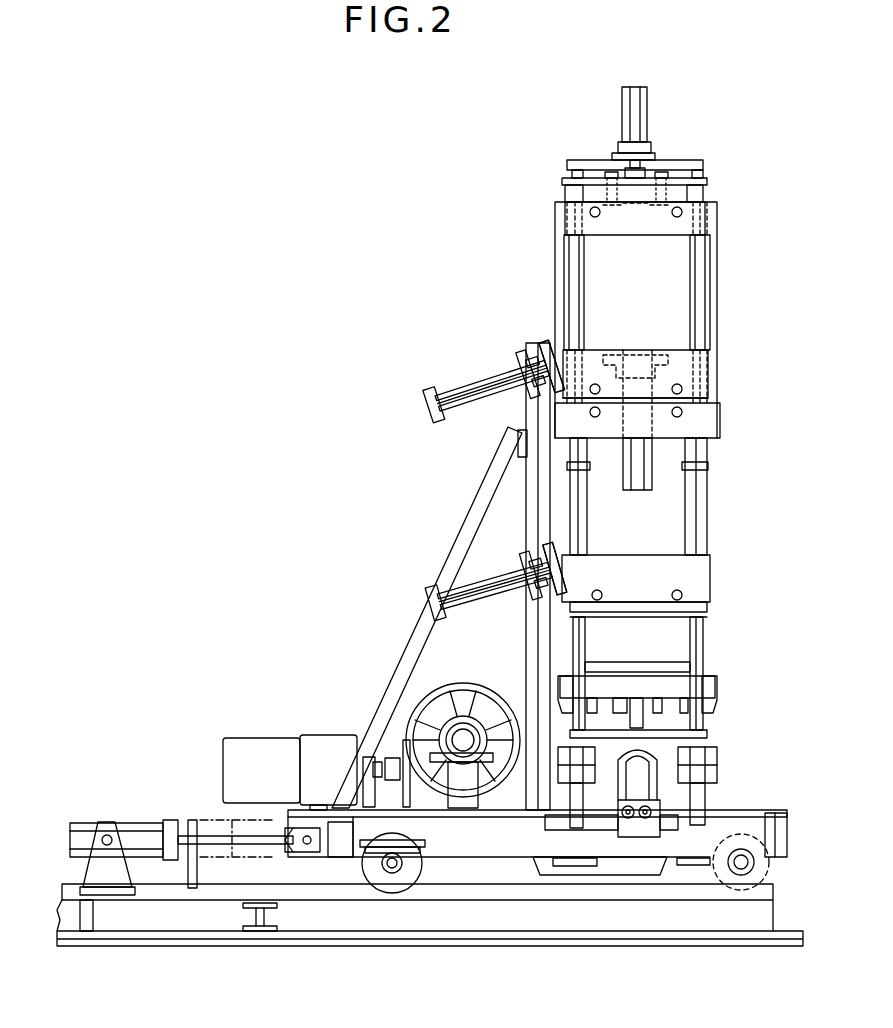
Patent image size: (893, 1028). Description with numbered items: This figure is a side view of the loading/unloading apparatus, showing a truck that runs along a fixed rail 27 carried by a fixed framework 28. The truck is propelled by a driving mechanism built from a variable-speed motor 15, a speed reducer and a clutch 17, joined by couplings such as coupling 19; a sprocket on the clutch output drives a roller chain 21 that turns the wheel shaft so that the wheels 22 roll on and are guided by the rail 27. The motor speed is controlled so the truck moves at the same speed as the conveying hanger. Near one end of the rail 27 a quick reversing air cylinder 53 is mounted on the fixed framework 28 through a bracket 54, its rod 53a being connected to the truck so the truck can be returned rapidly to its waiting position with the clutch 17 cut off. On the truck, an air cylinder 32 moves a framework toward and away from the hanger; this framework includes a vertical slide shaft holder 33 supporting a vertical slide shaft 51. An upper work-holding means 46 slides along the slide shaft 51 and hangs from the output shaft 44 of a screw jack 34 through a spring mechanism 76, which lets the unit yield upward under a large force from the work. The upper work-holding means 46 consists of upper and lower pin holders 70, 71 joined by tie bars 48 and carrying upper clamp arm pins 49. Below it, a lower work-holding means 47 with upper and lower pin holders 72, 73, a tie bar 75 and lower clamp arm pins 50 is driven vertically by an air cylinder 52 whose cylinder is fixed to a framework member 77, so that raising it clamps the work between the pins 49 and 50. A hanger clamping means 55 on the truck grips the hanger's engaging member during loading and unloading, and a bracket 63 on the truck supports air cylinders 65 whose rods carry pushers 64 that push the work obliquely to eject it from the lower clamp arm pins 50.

The variable-speed motor 15 is at (258, 738).
The clutch 17 is at (485, 702).
The coupling 19 is at (387, 760).
The roller chain 21 is at (460, 755).
The wheels 22 is at (412, 884).
The rail 27 is at (518, 886).
The fixed framework 28 is at (333, 934).
The air cylinder 32 is at (660, 752).
The slide shaft holder 33 is at (566, 166).
The screw jack 34 is at (648, 108).
The output shaft 44 is at (646, 171).
The upper work-holding means 46 is at (716, 424).
The lower work-holding means 47 is at (712, 586).
The tie bar 48 is at (560, 242).
The upper clamp arm pins 49 is at (590, 213).
The lower clamp arm pins 50 is at (598, 385).
The slide shaft 51 is at (576, 172).
The air cylinder 52 is at (640, 491).
The air cylinder 53 is at (152, 824).
The rod 53a is at (258, 845).
The bracket 54 is at (100, 834).
The hanger clamping means 55 is at (662, 810).
The bracket 63 is at (402, 662).
The pushers 64 is at (549, 343).
The air cylinders 65 is at (471, 395).
The upper pin holder 70 is at (680, 222).
The lower pin holder 71 is at (672, 428).
The upper pin holder 72 is at (690, 383).
The lower pin holder 73 is at (700, 565).
The tie bar 75 is at (588, 470).
The spring mechanism 76 is at (606, 180).
The member 77 is at (683, 356).